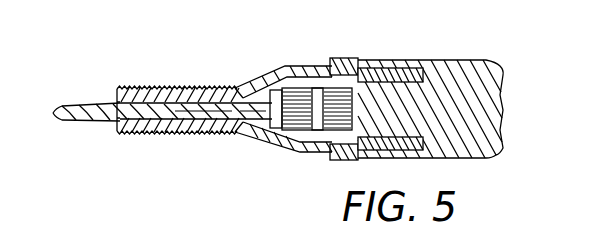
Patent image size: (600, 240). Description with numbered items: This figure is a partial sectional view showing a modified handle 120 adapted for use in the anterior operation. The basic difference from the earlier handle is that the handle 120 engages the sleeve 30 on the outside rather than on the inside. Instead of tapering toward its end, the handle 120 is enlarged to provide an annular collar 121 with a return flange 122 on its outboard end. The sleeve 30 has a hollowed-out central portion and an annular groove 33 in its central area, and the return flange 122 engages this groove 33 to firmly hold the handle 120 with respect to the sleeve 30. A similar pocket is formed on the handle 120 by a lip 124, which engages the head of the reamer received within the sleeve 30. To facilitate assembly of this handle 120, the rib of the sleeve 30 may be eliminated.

The sleeve 30 is at (312, 67).
The annular groove 33 is at (332, 142).
The modified handle 120 is at (484, 61).
The annular collar 121 is at (392, 67).
The return flange 122 is at (352, 59).
The lip 124 is at (298, 146).